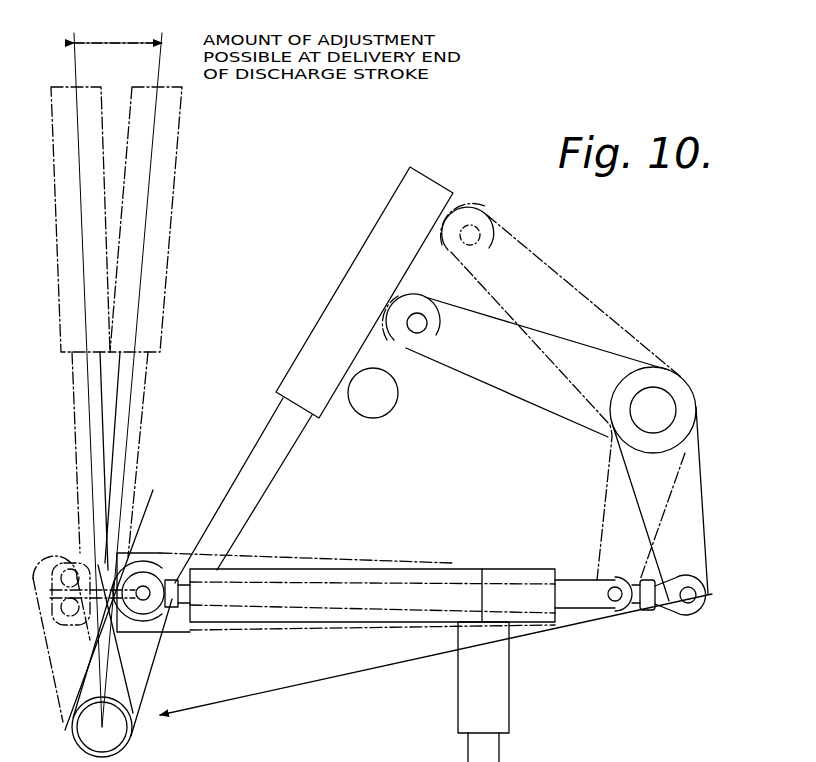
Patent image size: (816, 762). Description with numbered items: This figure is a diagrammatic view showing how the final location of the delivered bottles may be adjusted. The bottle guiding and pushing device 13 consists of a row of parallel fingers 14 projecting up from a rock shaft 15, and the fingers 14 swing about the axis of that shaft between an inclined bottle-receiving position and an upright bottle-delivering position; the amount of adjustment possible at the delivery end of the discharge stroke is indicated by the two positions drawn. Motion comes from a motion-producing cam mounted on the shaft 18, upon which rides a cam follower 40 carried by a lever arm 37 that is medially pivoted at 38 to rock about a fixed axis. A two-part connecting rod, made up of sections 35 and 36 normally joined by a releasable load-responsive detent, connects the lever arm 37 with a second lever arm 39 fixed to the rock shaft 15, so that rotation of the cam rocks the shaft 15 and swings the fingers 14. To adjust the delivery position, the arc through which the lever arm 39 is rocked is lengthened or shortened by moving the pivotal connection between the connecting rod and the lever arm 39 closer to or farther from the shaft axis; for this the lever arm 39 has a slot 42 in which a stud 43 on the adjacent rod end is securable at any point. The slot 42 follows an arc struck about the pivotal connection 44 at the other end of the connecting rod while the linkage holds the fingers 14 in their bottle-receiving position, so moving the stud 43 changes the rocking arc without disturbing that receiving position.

The bottle guiding and pushing device 13 is at (314, 375).
The fingers 14 is at (315, 343).
The rock shaft 15 is at (115, 741).
The shaft 18 is at (385, 408).
The connecting rod section 35 is at (580, 580).
The connecting rod section 36 is at (330, 622).
The lever arm 37 is at (578, 424).
The pivot 38 is at (672, 410).
The lever arm 39 is at (152, 672).
The cam follower 40 is at (423, 297).
The slot 42 is at (150, 568).
The stud 43 is at (158, 633).
The pivotal connection 44 is at (700, 596).